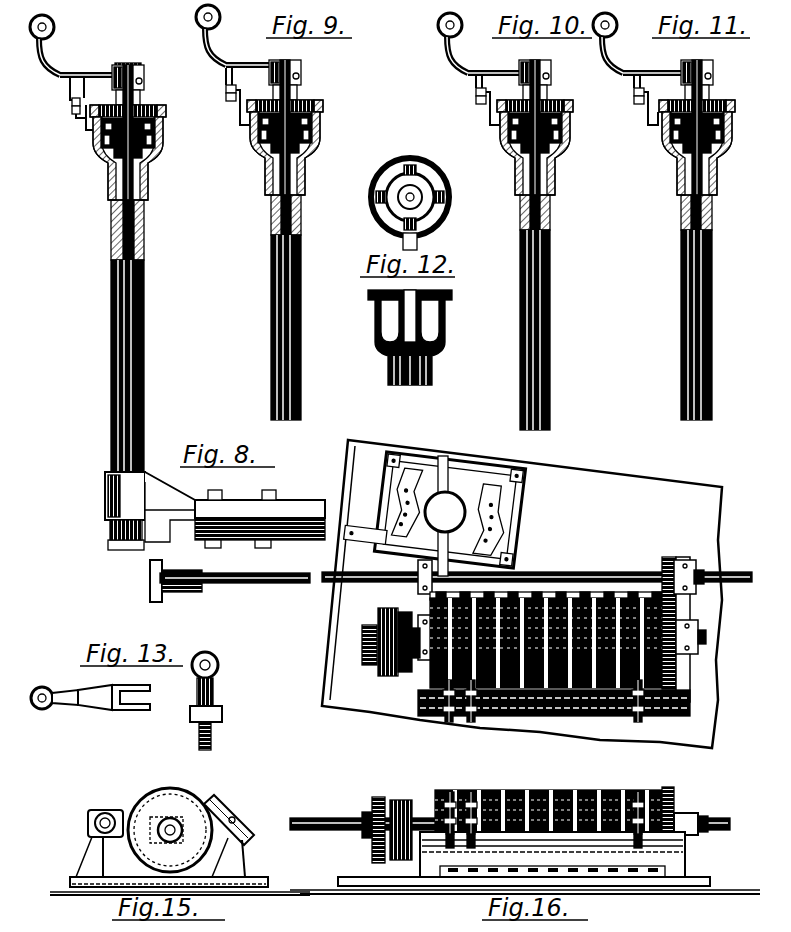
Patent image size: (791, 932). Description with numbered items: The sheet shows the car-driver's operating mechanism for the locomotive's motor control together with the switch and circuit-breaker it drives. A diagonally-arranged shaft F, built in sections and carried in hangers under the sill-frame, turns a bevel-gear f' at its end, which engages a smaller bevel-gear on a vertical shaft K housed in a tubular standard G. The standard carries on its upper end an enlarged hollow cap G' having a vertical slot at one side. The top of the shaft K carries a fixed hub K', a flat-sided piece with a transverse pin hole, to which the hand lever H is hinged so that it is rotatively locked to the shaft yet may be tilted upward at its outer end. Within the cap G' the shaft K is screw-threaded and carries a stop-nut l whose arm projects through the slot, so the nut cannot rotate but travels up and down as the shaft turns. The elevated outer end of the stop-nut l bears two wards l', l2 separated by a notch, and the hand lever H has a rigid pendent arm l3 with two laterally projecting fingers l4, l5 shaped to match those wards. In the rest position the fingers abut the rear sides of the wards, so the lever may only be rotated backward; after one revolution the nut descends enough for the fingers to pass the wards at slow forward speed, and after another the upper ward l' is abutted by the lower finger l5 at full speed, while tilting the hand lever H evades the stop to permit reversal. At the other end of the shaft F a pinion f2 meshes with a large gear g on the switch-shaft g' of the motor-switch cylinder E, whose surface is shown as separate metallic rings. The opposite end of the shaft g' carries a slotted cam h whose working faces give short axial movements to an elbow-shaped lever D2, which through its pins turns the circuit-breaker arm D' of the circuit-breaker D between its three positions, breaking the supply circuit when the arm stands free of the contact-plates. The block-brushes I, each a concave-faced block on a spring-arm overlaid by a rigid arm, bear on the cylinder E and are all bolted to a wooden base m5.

In FIG. 8, the hand lever H is at (71, 45).
In FIG. 9, the hand lever H is at (233, 35).
In FIG. 10, the hand lever H is at (479, 43).
In FIG. 11, the hand lever H is at (637, 43).
In FIG. 13, the hand lever H is at (134, 680).
In FIG. 8, the vertical shaft K is at (124, 315).
In FIG. 8, the fixed hub K' is at (136, 77).
In FIG. 9, the fixed hub K' is at (294, 73).
In FIG. 10, the fixed hub K' is at (539, 73).
In FIG. 11, the fixed hub K' is at (704, 74).
In FIG. 8, the stop-nut l is at (81, 121).
In FIG. 8, the upper ward l' is at (90, 87).
In FIG. 9, the upper ward l' is at (242, 84).
In FIG. 10, the upper ward l' is at (492, 88).
In FIG. 11, the upper ward l' is at (651, 88).
In FIG. 8, the lower ward l2 is at (84, 124).
In FIG. 9, the lower ward l2 is at (242, 120).
In FIG. 10, the lower ward l2 is at (492, 124).
In FIG. 11, the lower ward l2 is at (650, 126).
In FIG. 8, the pendent arm l3 is at (70, 86).
In FIG. 9, the pendent arm l3 is at (228, 76).
In FIG. 10, the pendent arm l3 is at (478, 82).
In FIG. 11, the pendent arm l3 is at (636, 82).
In FIG. 13, the pendent arm l3 is at (74, 704).
In FIG. 8, the upper finger l4 is at (72, 102).
In FIG. 9, the upper finger l4 is at (226, 89).
In FIG. 10, the upper finger l4 is at (478, 96).
In FIG. 11, the upper finger l4 is at (636, 96).
In FIG. 13, the upper finger l4 is at (199, 730).
In FIG. 8, the lower finger l5 is at (74, 112).
In FIG. 9, the lower finger l5 is at (228, 100).
In FIG. 10, the lower finger l5 is at (478, 104).
In FIG. 11, the lower finger l5 is at (636, 106).
In FIG. 13, the lower finger l5 is at (92, 690).
In FIG. 8, the tubular standard G is at (136, 336).
In FIG. 9, the tubular standard G is at (295, 307).
In FIG. 10, the tubular standard G is at (546, 312).
In FIG. 11, the tubular standard G is at (703, 307).
In FIG. 8, the hollow cap G' is at (137, 132).
In FIG. 9, the hollow cap G' is at (293, 127).
In FIG. 10, the hollow cap G' is at (543, 127).
In FIG. 11, the hollow cap G' is at (701, 127).
In FIG. 12, the hollow cap G' is at (419, 271).
In FIG. 8, the bevel-gear f' is at (171, 594).
In FIG. 8, the diagonally-arranged shaft F is at (456, 578).
In FIG. 15, the diagonally-arranged shaft F is at (90, 815).
In FIG. 16, the diagonally-arranged shaft F is at (350, 818).
In FIG. 8, the circuit-breaker D is at (434, 508).
In FIG. 8, the circuit-breaker arm D' is at (455, 516).
In FIG. 8, the elbow-shaped lever D2 is at (432, 590).
In FIG. 8, the motor-switch cylinder E is at (547, 635).
In FIG. 15, the motor-switch cylinder E is at (170, 822).
In FIG. 16, the motor-switch cylinder E is at (552, 801).
In FIG. 8, the pinion f2 is at (676, 562).
In FIG. 8, the gear g is at (685, 629).
In FIG. 16, the gear g is at (685, 806).
In FIG. 8, the switch-shaft g' is at (711, 637).
In FIG. 15, the switch-shaft g' is at (166, 821).
In FIG. 8, the slotted cam h is at (391, 642).
In FIG. 16, the slotted cam h is at (387, 820).
In FIG. 8, the block-brush I is at (449, 724).
In FIG. 15, the block-brush I is at (229, 836).
In FIG. 16, the block-brush I is at (473, 792).
In FIG. 8, the wooden base m5 is at (554, 709).
In FIG. 15, the wooden base m5 is at (238, 852).
In FIG. 16, the wooden base m5 is at (525, 863).